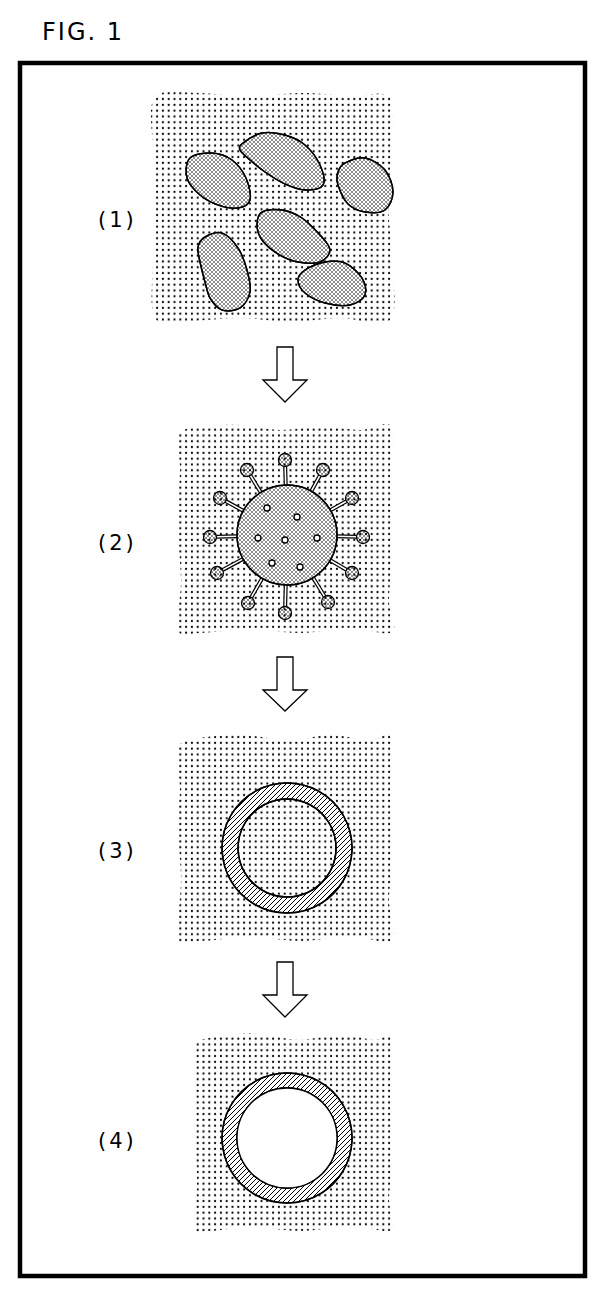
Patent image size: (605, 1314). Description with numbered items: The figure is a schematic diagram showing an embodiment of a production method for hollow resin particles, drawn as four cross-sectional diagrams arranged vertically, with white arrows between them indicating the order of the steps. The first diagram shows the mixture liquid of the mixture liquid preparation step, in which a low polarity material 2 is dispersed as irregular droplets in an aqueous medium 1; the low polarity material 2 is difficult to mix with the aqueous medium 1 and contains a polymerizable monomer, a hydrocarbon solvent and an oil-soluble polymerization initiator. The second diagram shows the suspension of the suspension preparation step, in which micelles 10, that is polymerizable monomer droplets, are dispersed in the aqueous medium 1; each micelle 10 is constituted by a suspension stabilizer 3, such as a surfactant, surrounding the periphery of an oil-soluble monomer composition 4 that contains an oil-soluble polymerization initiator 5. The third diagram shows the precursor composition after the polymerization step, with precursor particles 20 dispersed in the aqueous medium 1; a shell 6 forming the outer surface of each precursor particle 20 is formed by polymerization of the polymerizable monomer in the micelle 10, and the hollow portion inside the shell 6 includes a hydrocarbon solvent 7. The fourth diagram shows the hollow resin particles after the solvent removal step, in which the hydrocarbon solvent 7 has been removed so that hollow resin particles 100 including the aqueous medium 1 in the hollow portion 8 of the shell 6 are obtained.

The aqueous medium 1 is at (192, 133).
The low polarity material 2 is at (284, 127).
The suspension stabilizer 3 is at (261, 462).
The oil-soluble monomer composition 4 is at (295, 482).
The oil-soluble polymerization initiator 5 is at (270, 588).
The micelle 10 is at (289, 524).
The shell 6 is at (343, 818).
The hydrocarbon solvent 7 is at (287, 848).
The hollow portion 8 is at (347, 1157).
The precursor particle 20 is at (303, 962).
The hollow resin particle 100 is at (306, 1101).